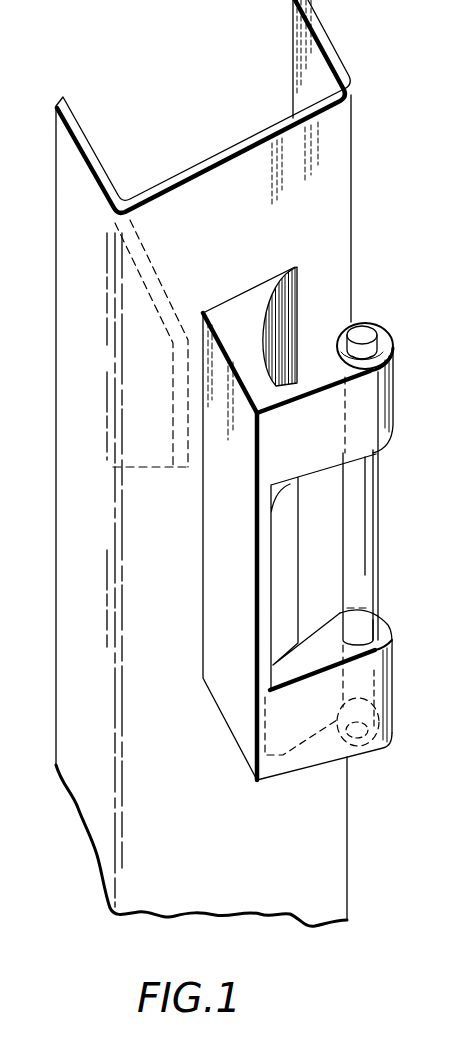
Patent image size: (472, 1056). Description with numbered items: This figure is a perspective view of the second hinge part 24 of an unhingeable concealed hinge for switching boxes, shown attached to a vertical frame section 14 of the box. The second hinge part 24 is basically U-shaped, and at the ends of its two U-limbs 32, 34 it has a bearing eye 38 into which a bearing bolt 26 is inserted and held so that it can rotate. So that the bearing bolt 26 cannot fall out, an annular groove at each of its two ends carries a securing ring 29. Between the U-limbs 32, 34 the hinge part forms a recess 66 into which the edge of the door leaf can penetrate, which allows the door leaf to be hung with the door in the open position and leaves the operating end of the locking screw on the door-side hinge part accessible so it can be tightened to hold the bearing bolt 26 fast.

The vertical frame section 14 is at (340, 155).
The second hinge part 24 is at (233, 707).
The bearing bolt 26 is at (365, 584).
The securing ring 29 is at (388, 346).
The U-limb 32 is at (391, 410).
The U-limb 34 is at (391, 697).
The bearing eye 38 is at (360, 438).
The recess 66 is at (288, 328).